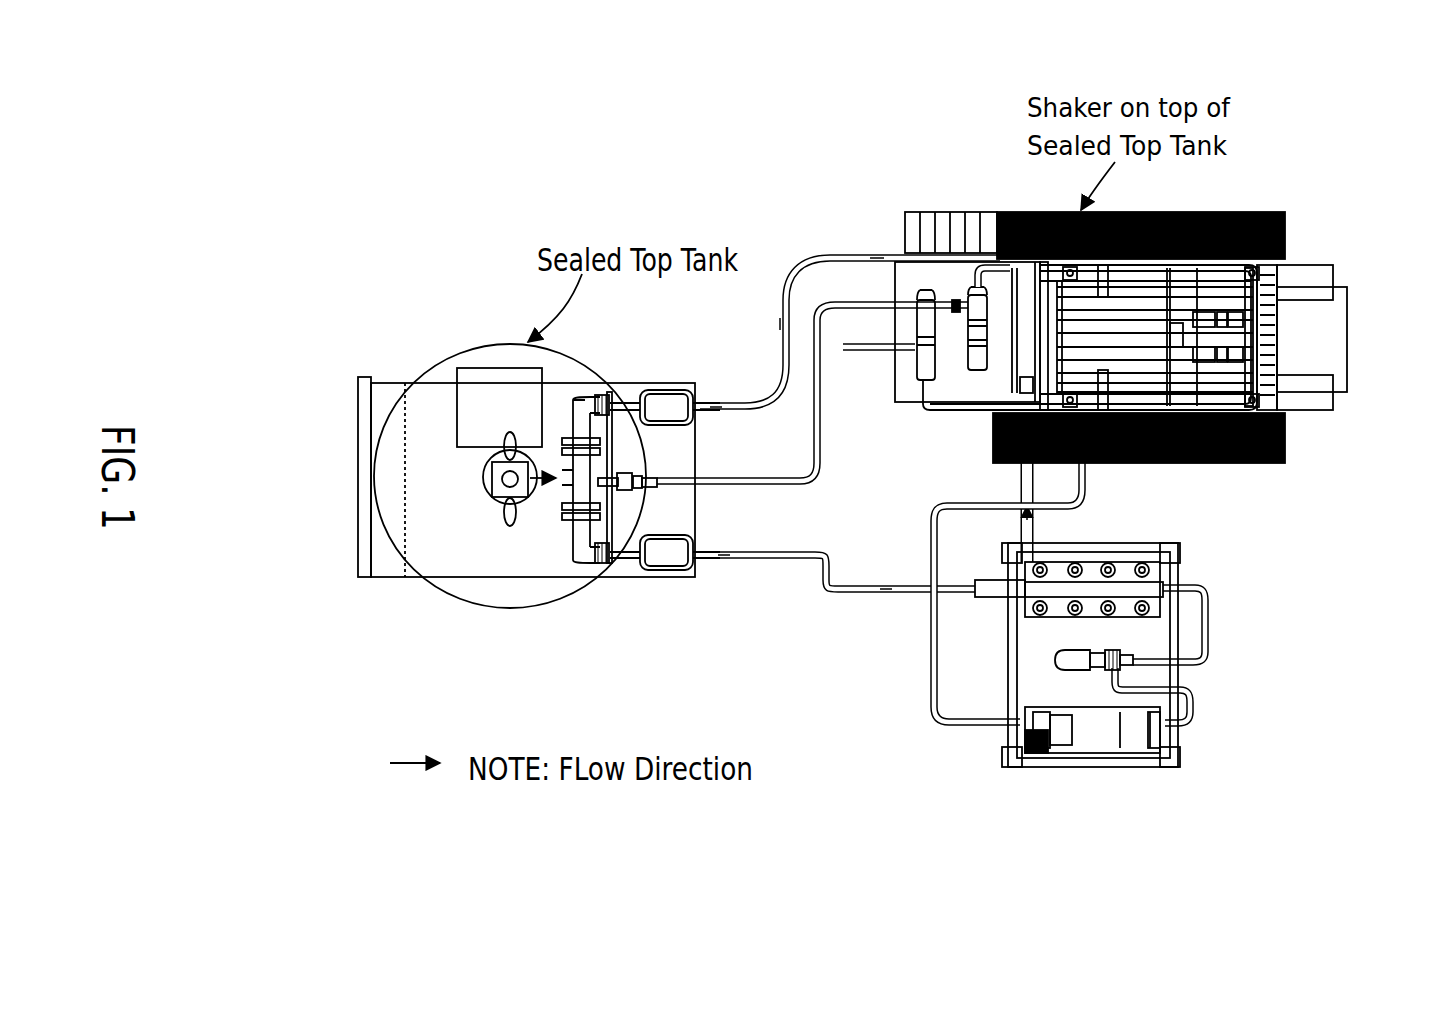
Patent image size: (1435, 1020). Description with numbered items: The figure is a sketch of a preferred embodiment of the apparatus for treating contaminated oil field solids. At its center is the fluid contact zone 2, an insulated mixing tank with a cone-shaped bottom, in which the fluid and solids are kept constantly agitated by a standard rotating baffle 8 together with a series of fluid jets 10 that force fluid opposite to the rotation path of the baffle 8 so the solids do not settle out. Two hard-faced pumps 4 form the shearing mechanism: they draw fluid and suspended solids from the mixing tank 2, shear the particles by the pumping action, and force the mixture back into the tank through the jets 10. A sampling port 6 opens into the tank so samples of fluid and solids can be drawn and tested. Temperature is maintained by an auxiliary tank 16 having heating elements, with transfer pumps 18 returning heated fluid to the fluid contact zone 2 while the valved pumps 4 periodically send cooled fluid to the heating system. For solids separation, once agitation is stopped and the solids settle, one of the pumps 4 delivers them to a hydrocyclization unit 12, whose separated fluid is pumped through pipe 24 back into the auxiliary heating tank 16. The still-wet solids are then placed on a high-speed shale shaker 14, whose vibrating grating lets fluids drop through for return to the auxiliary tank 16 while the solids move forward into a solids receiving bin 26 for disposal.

The fluid contact zone 2 is at (455, 563).
The hard-faced pumps 4 is at (668, 395).
The sampling port 6 is at (642, 476).
The rotating baffle 8 is at (503, 512).
The fluid jets 10 is at (372, 479).
The hydrocyclization unit 12 is at (1023, 670).
The shale shaker 14 is at (1143, 212).
The auxiliary tank 16 is at (940, 281).
The transfer pumps 18 is at (943, 395).
The pipe 24 is at (930, 677).
The solids receiving bin 26 is at (1035, 521).